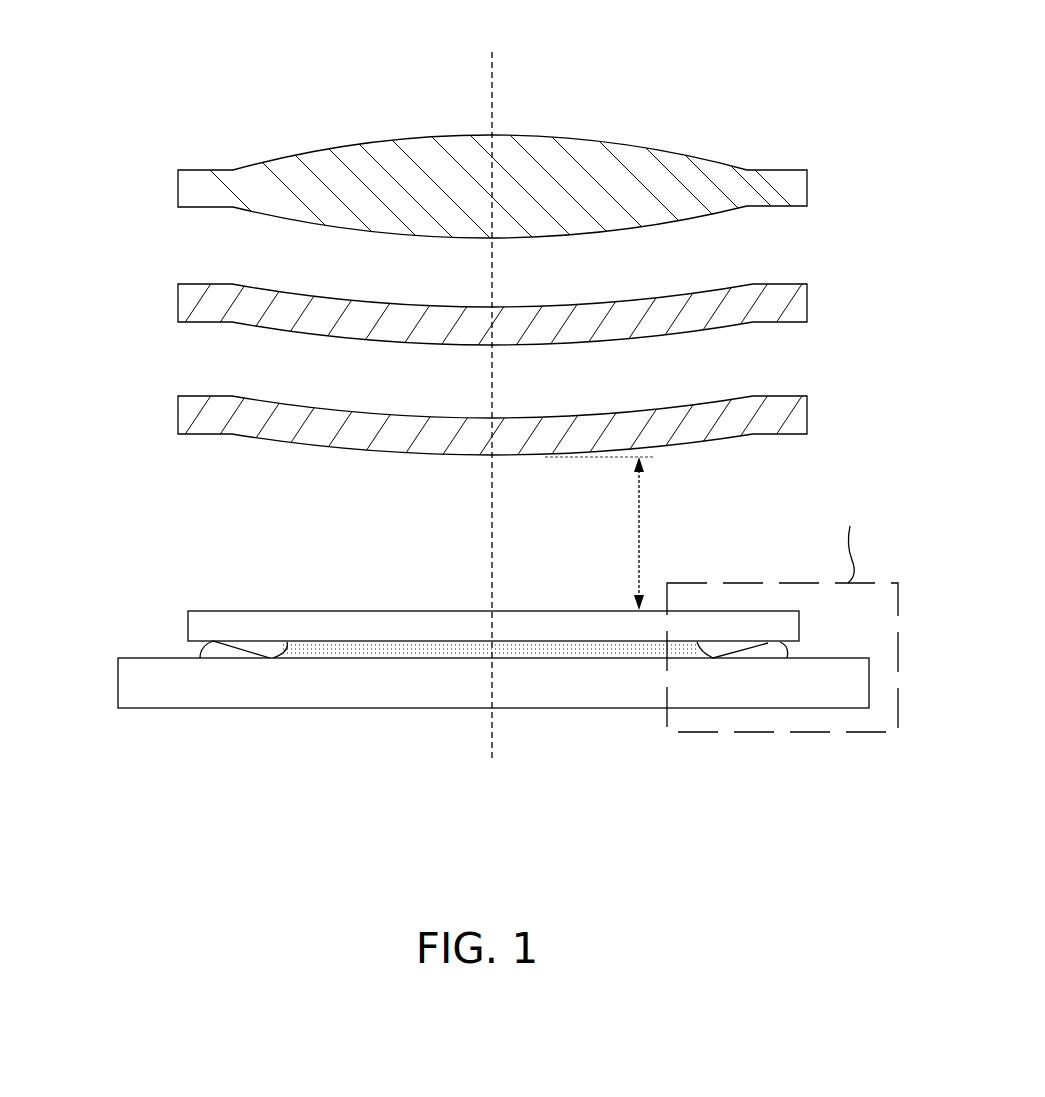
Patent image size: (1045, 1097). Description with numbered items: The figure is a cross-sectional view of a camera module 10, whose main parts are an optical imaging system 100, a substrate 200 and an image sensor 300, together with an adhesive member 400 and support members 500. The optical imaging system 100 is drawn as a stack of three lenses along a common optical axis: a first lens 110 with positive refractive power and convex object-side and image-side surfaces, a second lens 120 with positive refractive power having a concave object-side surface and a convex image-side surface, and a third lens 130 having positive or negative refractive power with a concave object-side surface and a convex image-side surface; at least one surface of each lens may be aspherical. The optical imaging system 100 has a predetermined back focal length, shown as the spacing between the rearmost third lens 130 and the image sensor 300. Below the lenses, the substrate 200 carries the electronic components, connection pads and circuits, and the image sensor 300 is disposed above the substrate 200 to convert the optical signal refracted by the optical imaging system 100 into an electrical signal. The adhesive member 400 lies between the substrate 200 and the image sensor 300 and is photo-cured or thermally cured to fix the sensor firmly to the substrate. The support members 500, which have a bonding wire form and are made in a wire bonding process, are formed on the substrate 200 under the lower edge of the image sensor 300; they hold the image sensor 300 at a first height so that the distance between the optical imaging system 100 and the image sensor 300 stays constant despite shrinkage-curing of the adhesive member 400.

The camera module 10 is at (472, 411).
The optical imaging system 100 is at (427, 298).
The first lens 110 is at (178, 190).
The second lens 120 is at (178, 300).
The third lens 130 is at (458, 424).
The substrate 200 is at (140, 700).
The image sensor 300 is at (208, 617).
The adhesive member 400 is at (367, 652).
The support members 500 is at (740, 655).